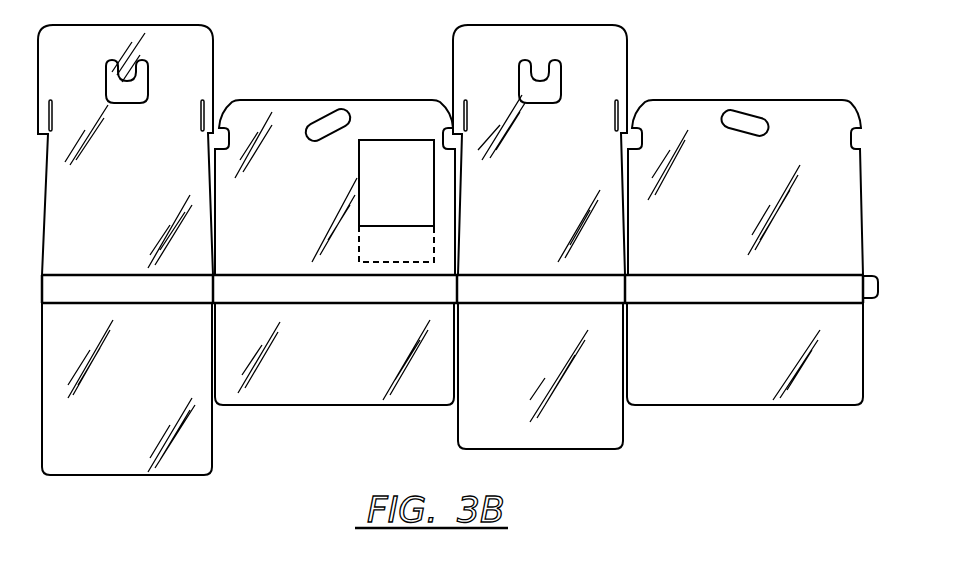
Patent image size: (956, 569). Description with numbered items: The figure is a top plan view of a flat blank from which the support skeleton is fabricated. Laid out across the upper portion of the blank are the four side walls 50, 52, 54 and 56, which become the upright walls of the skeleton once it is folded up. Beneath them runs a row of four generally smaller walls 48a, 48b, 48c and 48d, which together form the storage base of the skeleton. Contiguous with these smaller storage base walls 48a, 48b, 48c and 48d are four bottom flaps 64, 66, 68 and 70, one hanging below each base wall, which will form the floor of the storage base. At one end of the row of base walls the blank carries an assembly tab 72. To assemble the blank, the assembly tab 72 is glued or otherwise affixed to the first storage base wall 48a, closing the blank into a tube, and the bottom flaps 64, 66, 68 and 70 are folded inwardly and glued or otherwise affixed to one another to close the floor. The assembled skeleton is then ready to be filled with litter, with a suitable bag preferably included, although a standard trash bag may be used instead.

The first storage base wall 48a is at (145, 299).
The storage base wall 48b is at (352, 299).
The storage base wall 48c is at (553, 299).
The storage base wall 48d is at (752, 299).
The side wall 50 is at (138, 175).
The side wall 52 is at (296, 209).
The side wall 54 is at (558, 175).
The side wall 56 is at (734, 195).
The bottom flap 64 is at (144, 387).
The bottom flap 66 is at (346, 362).
The bottom flap 68 is at (541, 352).
The bottom flap 70 is at (743, 355).
The assembly tab 72 is at (868, 275).